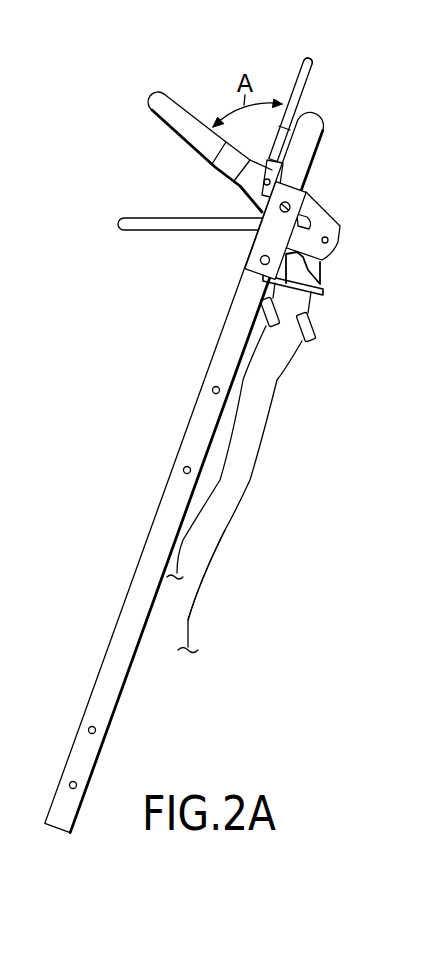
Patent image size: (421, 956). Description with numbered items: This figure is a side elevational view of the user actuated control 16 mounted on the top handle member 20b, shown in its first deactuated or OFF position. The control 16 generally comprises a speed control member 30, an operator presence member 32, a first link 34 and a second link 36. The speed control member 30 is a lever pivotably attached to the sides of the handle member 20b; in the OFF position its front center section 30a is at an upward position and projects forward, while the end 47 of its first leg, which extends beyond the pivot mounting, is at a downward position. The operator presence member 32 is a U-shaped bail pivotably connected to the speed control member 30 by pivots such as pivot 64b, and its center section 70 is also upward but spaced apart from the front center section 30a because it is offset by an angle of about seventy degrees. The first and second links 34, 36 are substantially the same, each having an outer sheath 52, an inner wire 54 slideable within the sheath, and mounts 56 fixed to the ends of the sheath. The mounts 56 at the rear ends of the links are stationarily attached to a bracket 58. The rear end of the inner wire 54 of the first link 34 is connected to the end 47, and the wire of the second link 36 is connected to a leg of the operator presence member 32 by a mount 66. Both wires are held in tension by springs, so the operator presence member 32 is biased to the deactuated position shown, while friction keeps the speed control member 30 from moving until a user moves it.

The user actuated control 16 is at (150, 110).
The top handle member 20b is at (207, 473).
The speed control member 30 is at (185, 135).
The front center section 30a is at (162, 97).
The operator presence member 32 is at (312, 112).
The first link 34 is at (248, 500).
The second link 36 is at (245, 386).
The end of the first leg 47 is at (344, 228).
The outer sheath 52 is at (218, 553).
The inner wire 54 is at (323, 270).
The mounts 56 is at (315, 330).
The bracket 58 is at (321, 295).
The pivot 64b is at (307, 197).
The mount 66 is at (324, 127).
The center section 70 is at (312, 62).